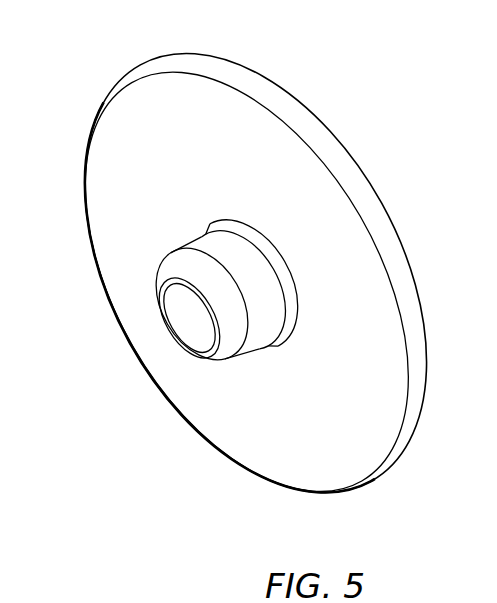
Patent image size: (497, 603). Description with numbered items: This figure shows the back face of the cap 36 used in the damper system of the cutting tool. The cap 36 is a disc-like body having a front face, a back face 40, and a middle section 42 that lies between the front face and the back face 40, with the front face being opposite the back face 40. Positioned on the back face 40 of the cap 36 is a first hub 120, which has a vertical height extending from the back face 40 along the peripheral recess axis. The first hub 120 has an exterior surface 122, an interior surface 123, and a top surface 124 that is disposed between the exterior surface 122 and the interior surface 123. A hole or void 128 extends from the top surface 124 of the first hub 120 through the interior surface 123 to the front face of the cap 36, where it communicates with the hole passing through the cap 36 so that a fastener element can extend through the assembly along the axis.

The cap 36 is at (177, 417).
The back face 40 is at (246, 281).
The middle section 42 is at (255, 275).
The first hub 120 is at (157, 208).
The exterior surface 122 is at (199, 188).
The interior surface 123 is at (200, 298).
The top surface 124 is at (177, 262).
The hole or void 128 is at (138, 337).